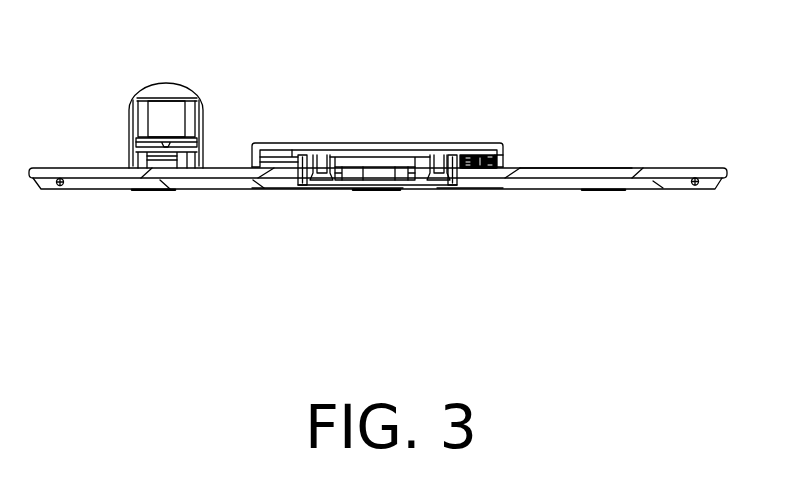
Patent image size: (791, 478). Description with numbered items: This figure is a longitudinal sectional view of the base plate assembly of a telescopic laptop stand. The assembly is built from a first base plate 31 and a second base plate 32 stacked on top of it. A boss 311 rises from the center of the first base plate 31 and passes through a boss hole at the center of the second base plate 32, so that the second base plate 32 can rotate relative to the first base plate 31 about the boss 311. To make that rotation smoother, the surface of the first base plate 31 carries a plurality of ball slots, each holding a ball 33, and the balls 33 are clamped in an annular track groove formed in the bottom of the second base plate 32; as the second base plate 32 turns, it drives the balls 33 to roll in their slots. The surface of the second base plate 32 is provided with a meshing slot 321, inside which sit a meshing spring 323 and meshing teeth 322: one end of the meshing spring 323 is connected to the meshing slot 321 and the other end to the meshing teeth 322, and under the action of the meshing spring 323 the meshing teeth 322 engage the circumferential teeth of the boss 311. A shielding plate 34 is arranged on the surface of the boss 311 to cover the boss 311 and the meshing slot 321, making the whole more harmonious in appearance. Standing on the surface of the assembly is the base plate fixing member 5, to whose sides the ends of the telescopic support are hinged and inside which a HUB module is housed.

The base plate fixing member 5 is at (130, 118).
The first base plate 31 is at (535, 186).
The second base plate 32 is at (598, 168).
The ball 33 is at (697, 186).
The shielding plate 34 is at (348, 155).
The boss 311 is at (302, 163).
The meshing slot 321 is at (502, 156).
The meshing teeth 322 is at (473, 161).
The meshing spring 323 is at (471, 153).